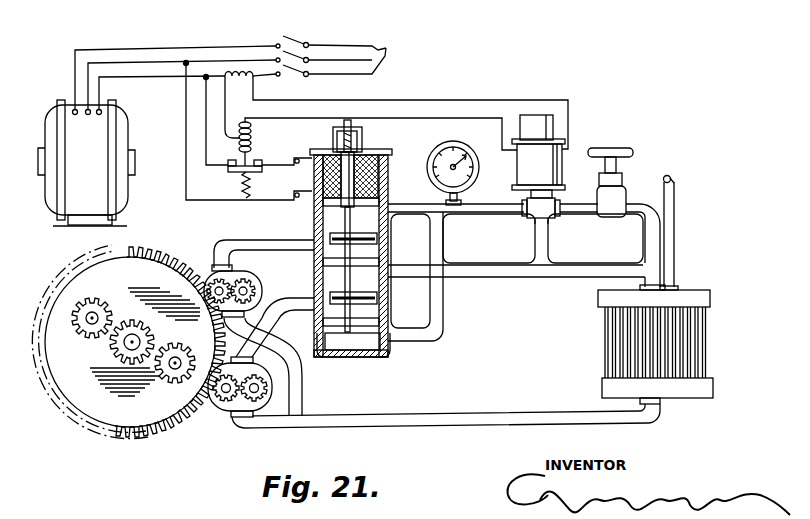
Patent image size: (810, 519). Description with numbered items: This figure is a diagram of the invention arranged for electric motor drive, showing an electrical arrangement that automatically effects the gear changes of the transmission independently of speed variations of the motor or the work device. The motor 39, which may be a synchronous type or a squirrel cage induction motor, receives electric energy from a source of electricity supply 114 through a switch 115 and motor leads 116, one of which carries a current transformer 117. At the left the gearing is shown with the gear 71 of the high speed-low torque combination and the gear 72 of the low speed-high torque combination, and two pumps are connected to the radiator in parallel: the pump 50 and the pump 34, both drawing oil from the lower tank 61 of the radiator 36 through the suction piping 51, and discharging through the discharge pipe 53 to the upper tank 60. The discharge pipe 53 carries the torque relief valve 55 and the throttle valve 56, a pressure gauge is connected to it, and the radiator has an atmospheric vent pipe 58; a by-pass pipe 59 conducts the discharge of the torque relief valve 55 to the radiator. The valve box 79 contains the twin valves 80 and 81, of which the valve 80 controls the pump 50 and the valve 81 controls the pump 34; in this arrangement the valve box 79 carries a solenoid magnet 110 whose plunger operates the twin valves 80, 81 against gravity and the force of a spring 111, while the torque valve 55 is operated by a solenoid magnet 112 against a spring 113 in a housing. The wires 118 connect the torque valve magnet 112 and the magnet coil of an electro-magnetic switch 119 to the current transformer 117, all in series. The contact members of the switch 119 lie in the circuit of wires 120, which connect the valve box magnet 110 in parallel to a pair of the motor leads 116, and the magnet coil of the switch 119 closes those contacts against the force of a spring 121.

The motor 39 is at (86, 163).
The motor leads 116 is at (143, 77).
The current transformer 117 is at (238, 70).
The switch 115 is at (300, 38).
The source of electricity supply 114 is at (365, 55).
The wires 120 is at (205, 128).
The wires 118 is at (475, 110).
The electro-magnetic switch 119 is at (253, 147).
The spring 121 is at (240, 182).
The solenoid magnet 110 is at (366, 250).
The spring 111 is at (362, 135).
The valve 80 is at (380, 242).
The valve 81 is at (380, 304).
The valve box 79 is at (353, 352).
The discharge pipe 53 is at (492, 206).
The by-pass pipe 59 is at (545, 276).
The spring 113 is at (560, 132).
The solenoid magnet 112 is at (563, 160).
The torque relief valve 55 is at (552, 220).
The throttle valve 56 is at (624, 197).
The atmospheric vent pipe 58 is at (670, 177).
The upper tank 60 is at (692, 290).
The radiator 36 is at (617, 342).
The lower tank 61 is at (690, 397).
The suction piping 51 is at (496, 415).
The pump 50 is at (208, 268).
The pump 34 is at (238, 407).
The gear 72 is at (162, 437).
The gear 71 is at (146, 435).